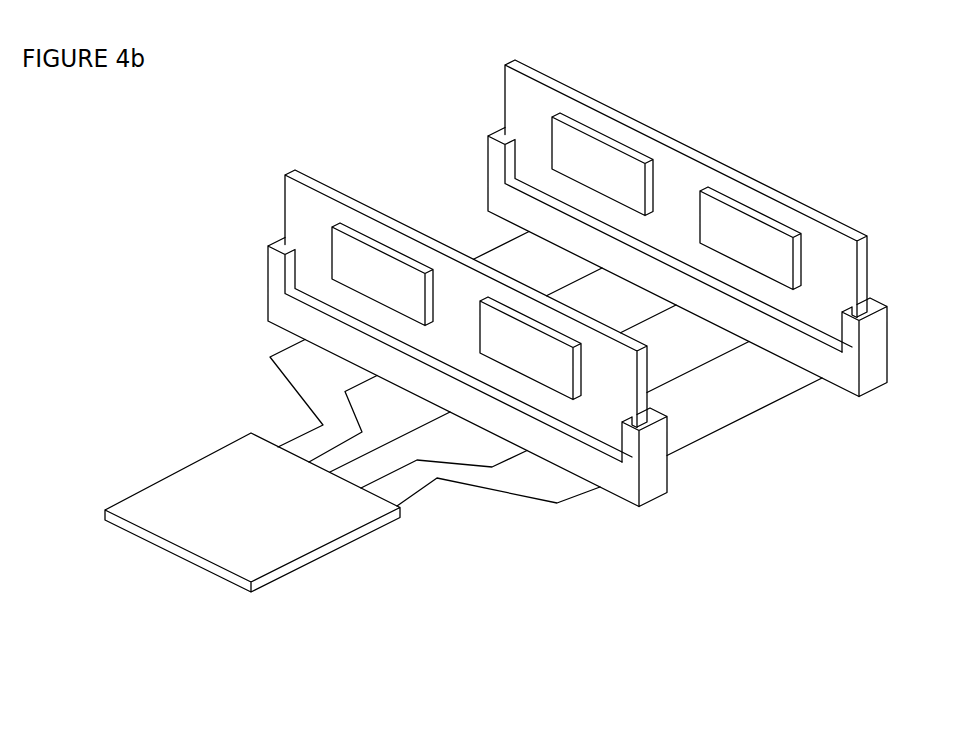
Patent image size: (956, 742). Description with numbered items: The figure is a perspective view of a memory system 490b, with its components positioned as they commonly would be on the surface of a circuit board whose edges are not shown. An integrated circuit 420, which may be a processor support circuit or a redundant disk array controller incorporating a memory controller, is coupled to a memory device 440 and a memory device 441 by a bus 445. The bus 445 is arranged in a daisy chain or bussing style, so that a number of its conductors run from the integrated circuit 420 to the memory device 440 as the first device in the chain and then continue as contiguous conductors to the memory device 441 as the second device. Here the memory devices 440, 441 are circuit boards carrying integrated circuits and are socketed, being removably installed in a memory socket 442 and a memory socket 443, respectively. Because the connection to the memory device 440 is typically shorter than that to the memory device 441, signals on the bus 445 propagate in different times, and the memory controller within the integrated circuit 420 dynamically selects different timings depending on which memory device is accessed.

The memory system 490b is at (150, 146).
The memory device 440 is at (285, 202).
The memory device 441 is at (505, 91).
The memory socket 442 is at (268, 293).
The memory socket 443 is at (488, 183).
The integrated circuit 420 is at (233, 440).
The bus 445 is at (532, 519).